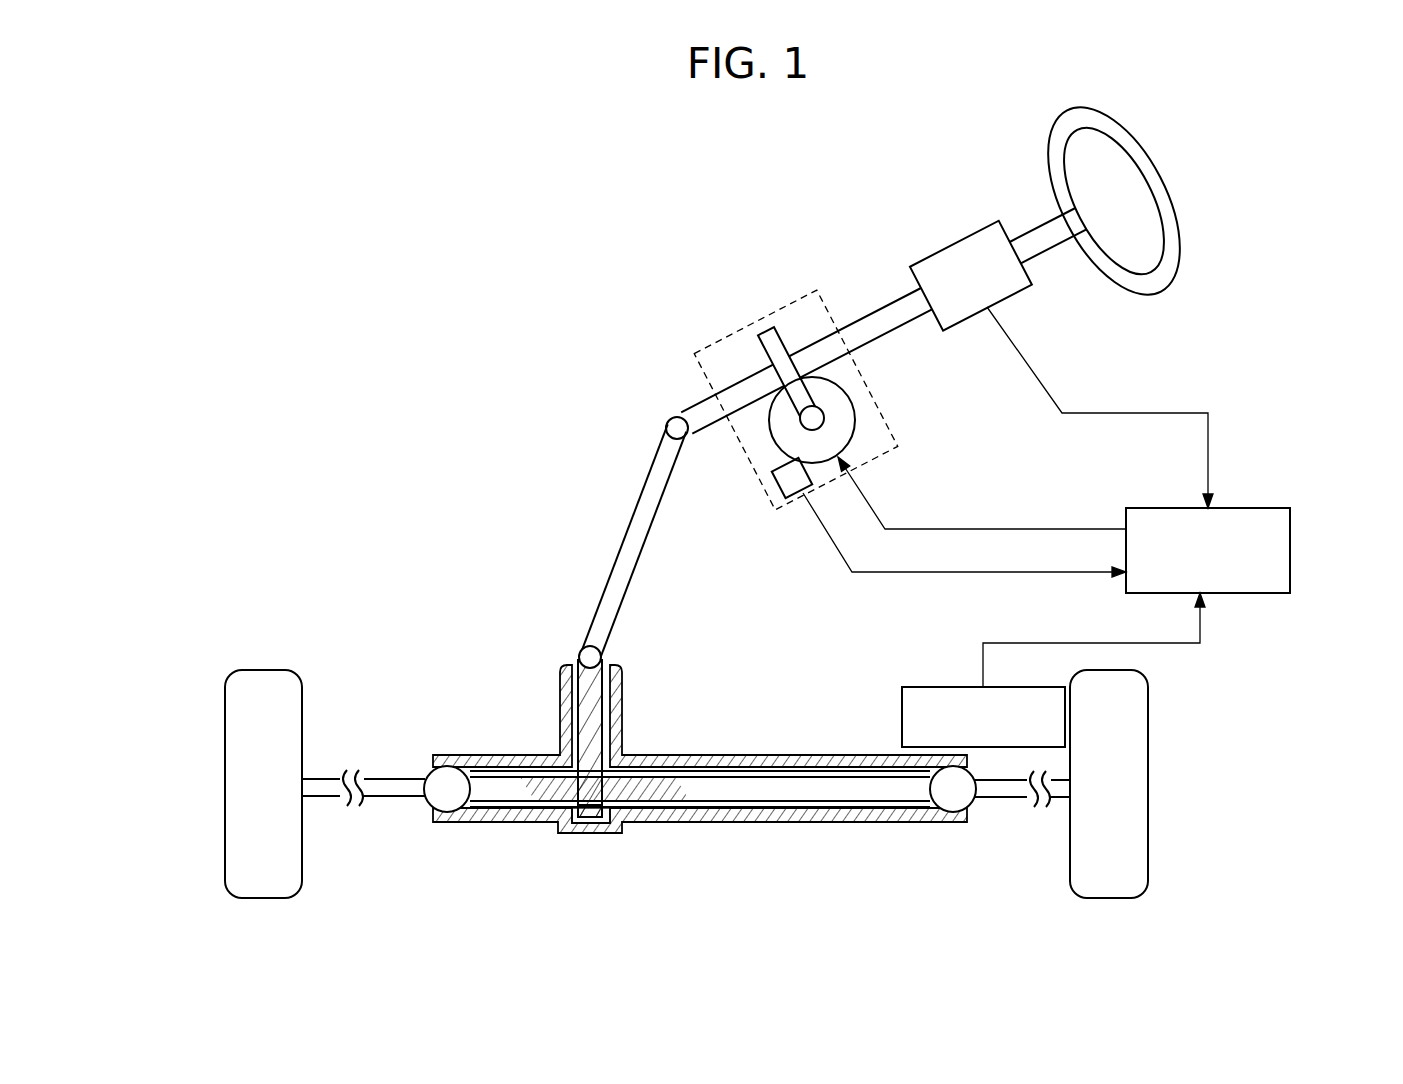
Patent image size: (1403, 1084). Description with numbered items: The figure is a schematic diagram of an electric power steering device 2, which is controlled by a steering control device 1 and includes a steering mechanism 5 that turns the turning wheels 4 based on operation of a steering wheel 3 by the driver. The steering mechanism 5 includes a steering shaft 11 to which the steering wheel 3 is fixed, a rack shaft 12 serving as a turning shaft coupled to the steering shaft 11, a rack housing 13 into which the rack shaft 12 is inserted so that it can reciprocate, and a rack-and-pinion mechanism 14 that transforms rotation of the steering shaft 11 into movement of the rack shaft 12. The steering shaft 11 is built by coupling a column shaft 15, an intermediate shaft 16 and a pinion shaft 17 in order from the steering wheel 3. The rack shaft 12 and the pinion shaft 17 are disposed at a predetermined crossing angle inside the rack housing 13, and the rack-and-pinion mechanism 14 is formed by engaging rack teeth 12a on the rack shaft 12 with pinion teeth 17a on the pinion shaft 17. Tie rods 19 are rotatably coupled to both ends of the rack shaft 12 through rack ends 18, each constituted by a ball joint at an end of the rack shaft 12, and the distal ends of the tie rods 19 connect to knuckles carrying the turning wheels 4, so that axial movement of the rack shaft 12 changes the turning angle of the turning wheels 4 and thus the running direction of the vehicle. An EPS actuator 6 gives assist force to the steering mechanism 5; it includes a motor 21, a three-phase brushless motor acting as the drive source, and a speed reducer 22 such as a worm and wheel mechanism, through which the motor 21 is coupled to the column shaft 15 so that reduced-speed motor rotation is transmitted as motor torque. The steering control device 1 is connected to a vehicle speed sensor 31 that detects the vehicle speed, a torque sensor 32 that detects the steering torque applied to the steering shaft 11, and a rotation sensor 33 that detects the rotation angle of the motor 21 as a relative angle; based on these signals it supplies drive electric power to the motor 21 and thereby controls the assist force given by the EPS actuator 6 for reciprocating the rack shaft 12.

The steering control device 1 is at (1262, 508).
The electric power steering device 2 is at (262, 275).
The steering wheel 3 is at (1147, 158).
The turning wheels 4 is at (265, 899).
The steering mechanism 5 is at (362, 633).
The EPS actuator 6 is at (775, 312).
The steering shaft 11 is at (490, 415).
The rack shaft 12 is at (727, 755).
The rack teeth 12a is at (536, 790).
The rack housing 13 is at (780, 755).
The rack-and-pinion mechanism 14 is at (630, 820).
The column shaft 15 is at (666, 410).
The intermediate shaft 16 is at (636, 530).
The pinion shaft 17 is at (577, 663).
The pinion teeth 17a is at (593, 823).
The rack ends 18 is at (440, 798).
The tie rods 19 is at (318, 792).
The motor 21 is at (852, 405).
The speed reducer 22 is at (790, 431).
The vehicle speed sensor 31 is at (917, 687).
The torque sensor 32 is at (965, 242).
The rotation sensor 33 is at (781, 497).